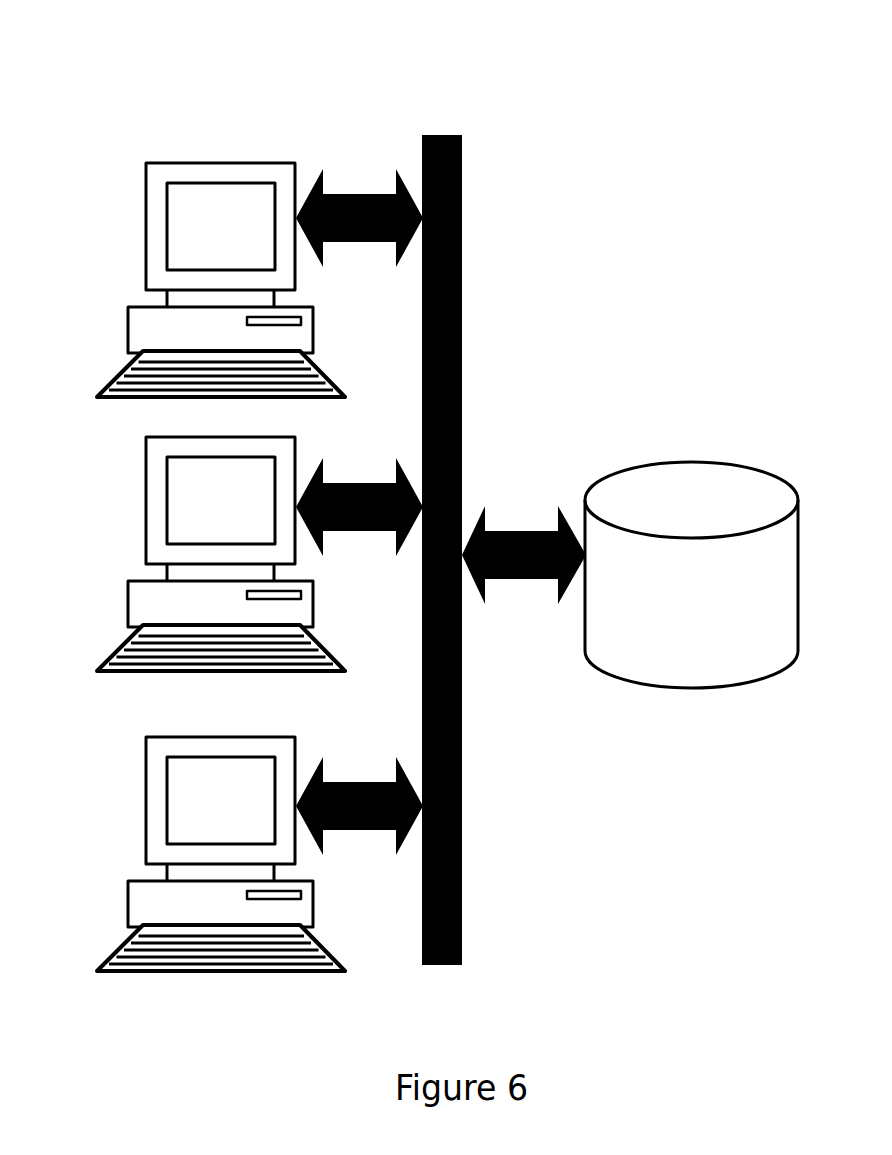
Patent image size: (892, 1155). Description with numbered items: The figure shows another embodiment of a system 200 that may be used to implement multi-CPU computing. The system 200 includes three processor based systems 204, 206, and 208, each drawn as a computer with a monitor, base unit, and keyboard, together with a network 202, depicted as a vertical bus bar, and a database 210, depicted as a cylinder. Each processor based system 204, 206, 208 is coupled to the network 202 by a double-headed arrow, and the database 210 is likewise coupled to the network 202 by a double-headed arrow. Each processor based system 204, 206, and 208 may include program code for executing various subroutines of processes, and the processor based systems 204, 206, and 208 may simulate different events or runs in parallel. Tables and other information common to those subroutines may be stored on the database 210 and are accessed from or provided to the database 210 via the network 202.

The system 200 is at (723, 113).
The network 202 is at (462, 273).
The processor based system 204 is at (135, 835).
The processor based system 206 is at (135, 562).
The processor based system 208 is at (135, 275).
The database 210 is at (660, 460).